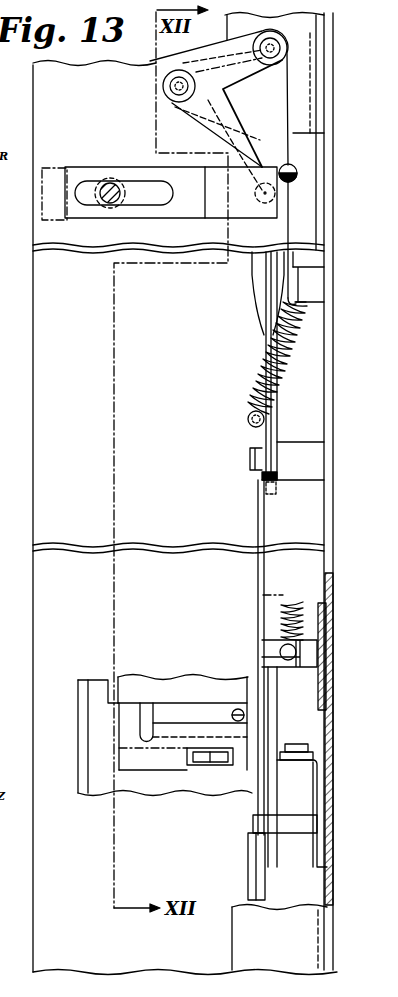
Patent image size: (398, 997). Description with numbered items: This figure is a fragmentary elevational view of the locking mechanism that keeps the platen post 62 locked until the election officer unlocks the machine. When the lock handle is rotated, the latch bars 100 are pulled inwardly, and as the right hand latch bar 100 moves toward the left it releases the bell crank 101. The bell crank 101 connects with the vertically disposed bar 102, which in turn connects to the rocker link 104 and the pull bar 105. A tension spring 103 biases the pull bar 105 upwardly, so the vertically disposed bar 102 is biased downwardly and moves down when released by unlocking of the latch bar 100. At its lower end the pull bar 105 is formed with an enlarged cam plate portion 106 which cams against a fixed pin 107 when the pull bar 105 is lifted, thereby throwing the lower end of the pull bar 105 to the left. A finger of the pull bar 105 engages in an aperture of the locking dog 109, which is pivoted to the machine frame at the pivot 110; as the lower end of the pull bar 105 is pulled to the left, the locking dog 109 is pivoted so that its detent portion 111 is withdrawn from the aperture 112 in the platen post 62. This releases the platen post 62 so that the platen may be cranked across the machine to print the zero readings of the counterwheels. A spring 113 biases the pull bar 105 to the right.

The platen post 62 is at (100, 783).
The latch bar 100 is at (75, 168).
The bell crank 101 is at (198, 127).
The vertically disposed bar 102 is at (262, 228).
The tension spring 103 is at (255, 395).
The rocker link 104 is at (252, 455).
The pull bar 105 is at (257, 568).
The cam plate portion 106 is at (248, 872).
The fixed pin 107 is at (291, 828).
The locking dog 109 is at (190, 768).
The pivot 110 is at (293, 742).
The detent portion 111 is at (223, 767).
The aperture 112 is at (203, 772).
The spring 113 is at (280, 628).